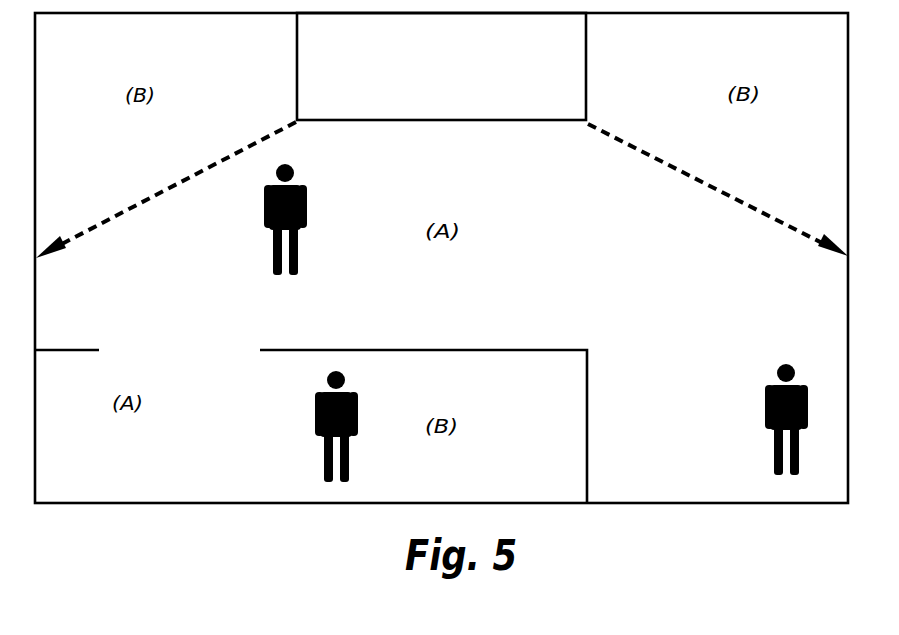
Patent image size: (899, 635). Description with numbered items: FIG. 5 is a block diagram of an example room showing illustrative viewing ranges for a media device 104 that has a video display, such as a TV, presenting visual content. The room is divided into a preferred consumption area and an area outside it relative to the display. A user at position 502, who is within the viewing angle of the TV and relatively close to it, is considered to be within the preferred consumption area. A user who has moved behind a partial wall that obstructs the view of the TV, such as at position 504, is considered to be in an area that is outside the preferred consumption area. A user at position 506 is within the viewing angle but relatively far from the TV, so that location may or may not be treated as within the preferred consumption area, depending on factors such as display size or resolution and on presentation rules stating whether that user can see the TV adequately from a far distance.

The media device 104 is at (586, 64).
The user position 502 is at (300, 184).
The user position 504 is at (316, 405).
The user position 506 is at (775, 383).